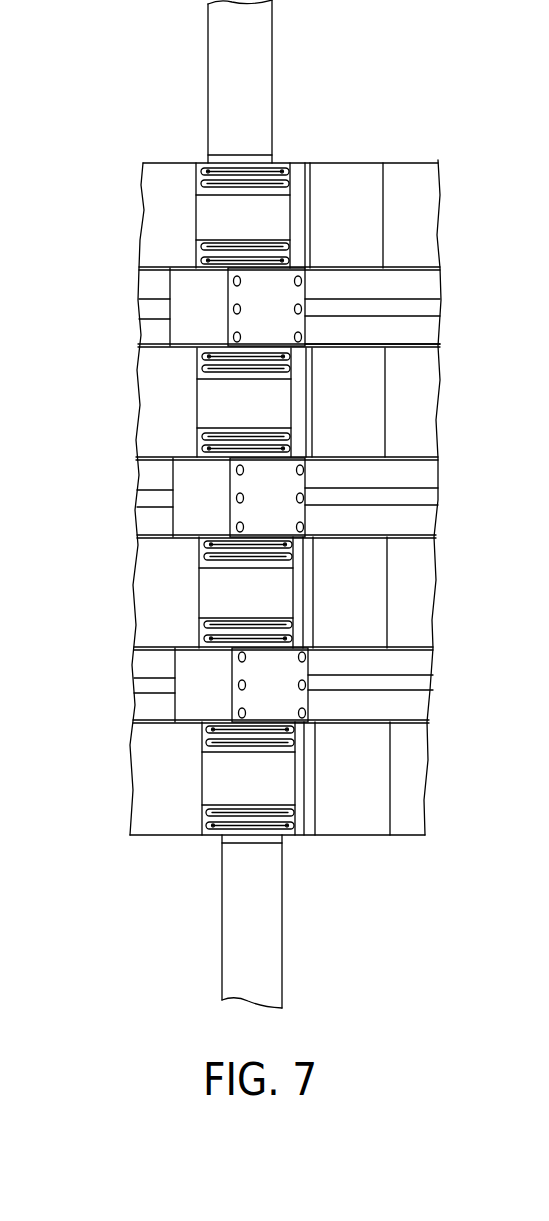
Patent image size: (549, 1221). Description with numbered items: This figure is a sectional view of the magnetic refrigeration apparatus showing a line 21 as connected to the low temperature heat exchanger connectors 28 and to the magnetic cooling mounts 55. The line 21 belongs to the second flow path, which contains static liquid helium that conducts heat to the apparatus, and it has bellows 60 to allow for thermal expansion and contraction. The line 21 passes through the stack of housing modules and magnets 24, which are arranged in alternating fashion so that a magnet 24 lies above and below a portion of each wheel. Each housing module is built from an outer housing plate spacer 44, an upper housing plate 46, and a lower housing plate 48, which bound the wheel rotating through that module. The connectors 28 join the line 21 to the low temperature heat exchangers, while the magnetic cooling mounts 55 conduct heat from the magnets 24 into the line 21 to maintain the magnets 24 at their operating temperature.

The line 21 is at (272, 78).
The magnet 24 is at (420, 190).
The heat exchanger connector 28 is at (190, 310).
The outer housing plate spacer 44 is at (420, 307).
The upper housing plate 46 is at (418, 287).
The lower housing plate 48 is at (410, 333).
The magnetic cooling mount 55 is at (290, 217).
The bellows 60 is at (282, 163).